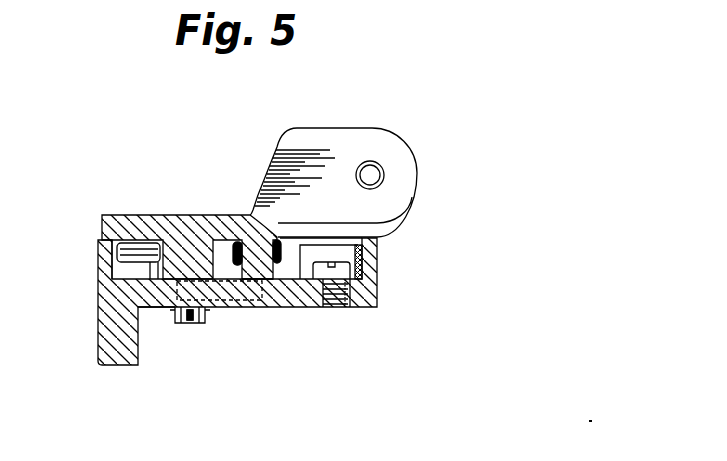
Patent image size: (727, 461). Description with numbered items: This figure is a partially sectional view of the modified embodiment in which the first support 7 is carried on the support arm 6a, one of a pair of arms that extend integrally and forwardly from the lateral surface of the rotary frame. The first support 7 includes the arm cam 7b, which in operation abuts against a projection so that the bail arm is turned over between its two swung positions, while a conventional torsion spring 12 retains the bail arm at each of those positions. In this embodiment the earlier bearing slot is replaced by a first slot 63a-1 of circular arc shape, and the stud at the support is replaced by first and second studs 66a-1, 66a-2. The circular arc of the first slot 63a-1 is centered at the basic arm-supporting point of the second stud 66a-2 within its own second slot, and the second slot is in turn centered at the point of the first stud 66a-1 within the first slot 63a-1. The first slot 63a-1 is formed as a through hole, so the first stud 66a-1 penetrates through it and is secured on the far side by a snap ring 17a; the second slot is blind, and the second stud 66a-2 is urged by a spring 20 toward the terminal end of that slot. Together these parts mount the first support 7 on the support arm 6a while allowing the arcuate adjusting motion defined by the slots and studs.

The first support 7 is at (275, 147).
The arm cam 7b is at (262, 180).
The torsion spring 12 is at (100, 268).
The snap ring 17a is at (167, 313).
The first slot 63a-1 is at (177, 323).
The first stud 66a-1 is at (187, 310).
The spring 20 is at (234, 268).
The second stud 66a-2 is at (257, 307).
The support arm 6a is at (303, 302).